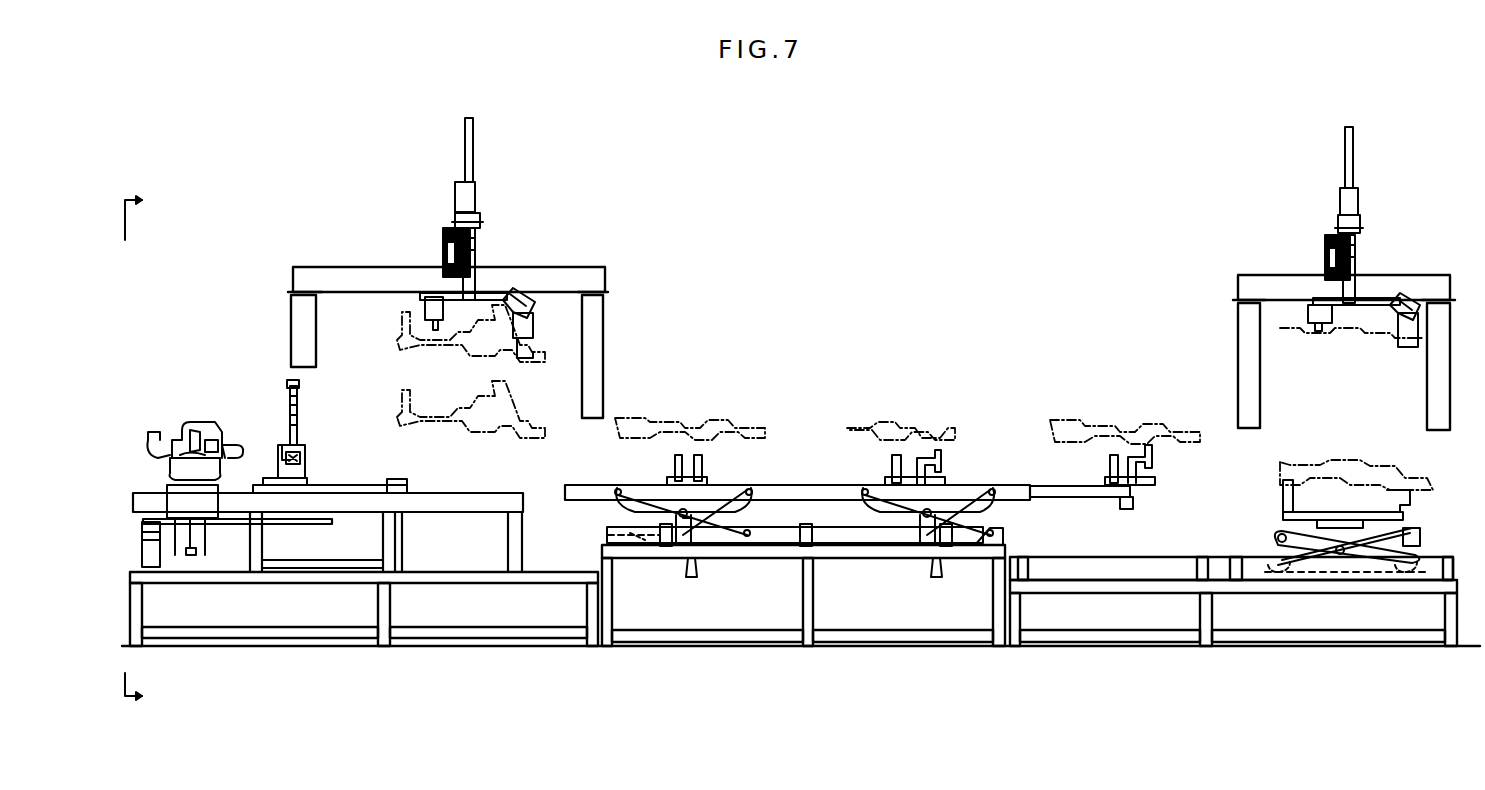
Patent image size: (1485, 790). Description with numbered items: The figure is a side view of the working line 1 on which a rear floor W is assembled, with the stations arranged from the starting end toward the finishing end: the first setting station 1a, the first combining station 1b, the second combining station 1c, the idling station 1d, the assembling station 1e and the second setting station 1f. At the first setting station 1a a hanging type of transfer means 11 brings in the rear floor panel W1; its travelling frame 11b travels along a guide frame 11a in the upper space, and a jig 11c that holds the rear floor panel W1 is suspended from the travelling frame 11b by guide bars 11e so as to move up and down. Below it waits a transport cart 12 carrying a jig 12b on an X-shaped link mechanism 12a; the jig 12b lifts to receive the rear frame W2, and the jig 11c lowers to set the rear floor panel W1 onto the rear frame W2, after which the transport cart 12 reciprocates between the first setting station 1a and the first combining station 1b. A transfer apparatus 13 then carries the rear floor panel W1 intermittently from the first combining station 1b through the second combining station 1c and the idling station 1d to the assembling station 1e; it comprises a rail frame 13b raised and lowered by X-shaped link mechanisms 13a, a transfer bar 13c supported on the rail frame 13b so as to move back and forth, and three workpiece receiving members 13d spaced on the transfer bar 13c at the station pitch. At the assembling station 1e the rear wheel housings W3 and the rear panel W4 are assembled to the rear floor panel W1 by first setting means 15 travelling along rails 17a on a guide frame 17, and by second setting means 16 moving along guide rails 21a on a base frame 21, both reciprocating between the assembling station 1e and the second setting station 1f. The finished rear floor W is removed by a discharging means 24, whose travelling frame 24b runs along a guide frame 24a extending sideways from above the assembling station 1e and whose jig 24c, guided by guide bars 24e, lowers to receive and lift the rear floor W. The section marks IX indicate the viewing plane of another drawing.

The working line 1 is at (853, 207).
The first setting station 1a is at (1352, 426).
The first combining station 1b is at (1130, 386).
The second combining station 1c is at (923, 386).
The idling station 1d is at (700, 386).
The assembling station 1e is at (474, 390).
The second setting station 1f is at (244, 385).
The transfer means 11 is at (1340, 227).
The guide frame 11a is at (1325, 258).
The travelling frame 11b is at (1356, 260).
The jig 11c is at (1318, 305).
The guide bars 11e is at (1354, 150).
The transport cart 12 is at (1312, 549).
The X-shaped link mechanism 12a is at (1270, 548).
The jig 12b is at (1285, 513).
The transfer apparatus 13 is at (850, 497).
The X-shaped link mechanisms 13a is at (620, 513).
The rail frame 13b is at (790, 490).
The transfer bar 13c is at (985, 485).
The workpiece receiving members 13d is at (672, 477).
The first setting means 15 is at (150, 422).
The second setting means 16 is at (306, 440).
The guide frame 17 is at (488, 494).
The rails 17a is at (444, 493).
The base frame 21 is at (390, 491).
The guide rails 21a is at (338, 493).
The discharging means 24 is at (467, 238).
The guide frame 24a is at (443, 248).
The travelling frame 24b is at (476, 256).
The jig 24c is at (425, 298).
The guide bars 24e is at (473, 140).
The rear floor W is at (398, 412).
The rear floor panel W1 is at (1365, 340).
The rear frame W2 is at (1385, 464).
The rear wheel housings W3 is at (188, 426).
The rear panel W4 is at (300, 396).
The section line IX- IX is at (153, 452).